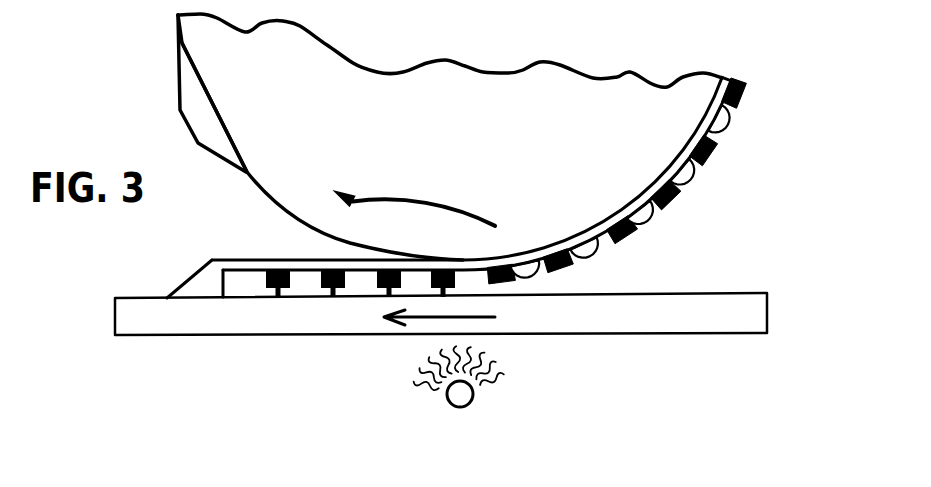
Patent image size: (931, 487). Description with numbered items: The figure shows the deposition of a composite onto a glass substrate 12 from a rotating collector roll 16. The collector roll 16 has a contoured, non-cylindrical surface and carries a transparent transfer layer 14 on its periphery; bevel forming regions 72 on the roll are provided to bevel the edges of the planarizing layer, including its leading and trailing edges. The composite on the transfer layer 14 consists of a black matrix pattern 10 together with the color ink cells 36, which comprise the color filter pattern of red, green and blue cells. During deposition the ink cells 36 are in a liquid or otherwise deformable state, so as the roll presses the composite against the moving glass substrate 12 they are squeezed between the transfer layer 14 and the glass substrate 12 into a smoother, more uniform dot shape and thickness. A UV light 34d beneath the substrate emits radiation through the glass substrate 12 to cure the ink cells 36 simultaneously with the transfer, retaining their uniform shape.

The black matrix pattern 10 is at (670, 200).
The glass substrate 12 is at (778, 308).
The transfer layer 14 is at (723, 84).
The collector roll 16 is at (480, 145).
The UV light 34d is at (452, 406).
The color ink cells 36 is at (733, 130).
The bevel forming regions 72 is at (178, 84).